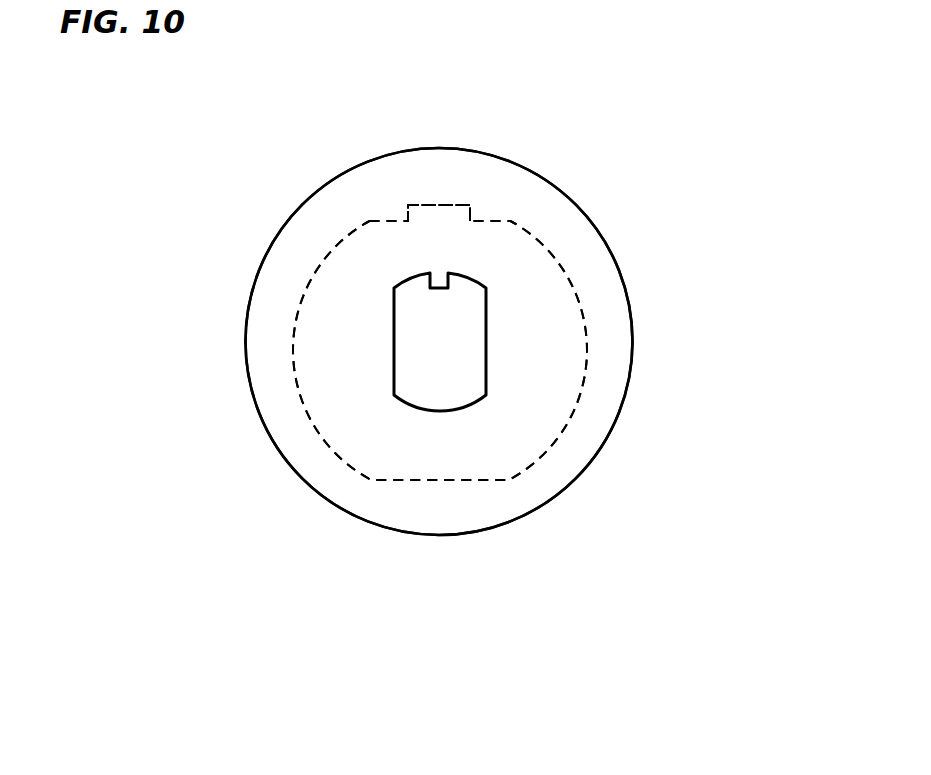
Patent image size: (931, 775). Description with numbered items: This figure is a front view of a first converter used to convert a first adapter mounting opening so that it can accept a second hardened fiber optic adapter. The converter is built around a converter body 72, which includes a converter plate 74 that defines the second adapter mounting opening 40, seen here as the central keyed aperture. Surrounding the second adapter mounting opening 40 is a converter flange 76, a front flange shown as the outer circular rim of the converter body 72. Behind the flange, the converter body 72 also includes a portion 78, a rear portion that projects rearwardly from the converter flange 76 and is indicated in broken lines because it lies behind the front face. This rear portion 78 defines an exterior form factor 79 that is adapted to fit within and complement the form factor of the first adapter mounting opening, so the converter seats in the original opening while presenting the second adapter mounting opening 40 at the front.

The second adapter mounting opening 40 is at (486, 375).
The converter body 72 is at (578, 479).
The converter plate 74 is at (367, 415).
The converter flange 76 is at (297, 212).
The portion 78 is at (536, 307).
The exterior form factor 79 is at (439, 213).